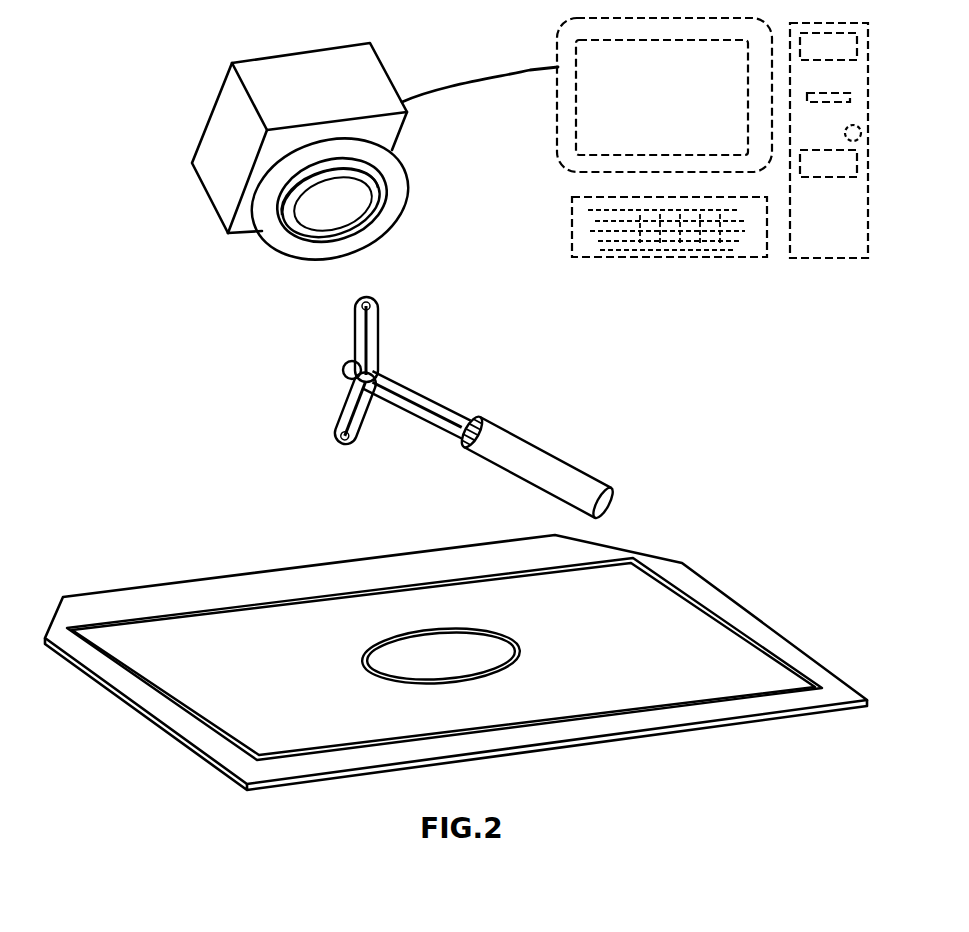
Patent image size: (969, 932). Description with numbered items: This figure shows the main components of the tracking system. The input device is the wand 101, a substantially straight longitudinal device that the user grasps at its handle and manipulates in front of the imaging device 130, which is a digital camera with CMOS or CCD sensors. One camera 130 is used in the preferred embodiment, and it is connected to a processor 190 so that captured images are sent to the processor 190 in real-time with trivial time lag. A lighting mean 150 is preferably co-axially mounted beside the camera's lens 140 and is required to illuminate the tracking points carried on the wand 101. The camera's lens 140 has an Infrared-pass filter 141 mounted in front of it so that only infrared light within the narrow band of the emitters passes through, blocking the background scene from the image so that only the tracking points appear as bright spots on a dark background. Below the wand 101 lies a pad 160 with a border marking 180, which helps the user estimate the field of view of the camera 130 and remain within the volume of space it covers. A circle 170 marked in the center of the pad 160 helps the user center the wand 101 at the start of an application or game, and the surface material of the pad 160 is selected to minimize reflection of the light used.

The wand 101 is at (558, 447).
The imaging device 130 is at (207, 185).
The camera's lens 140 is at (397, 212).
The Infrared-pass filter 141 is at (342, 217).
The lighting mean 150 is at (280, 253).
The pad 160 is at (153, 600).
The circle 170 is at (513, 675).
The border marking 180 is at (697, 600).
The processor 190 is at (712, 272).